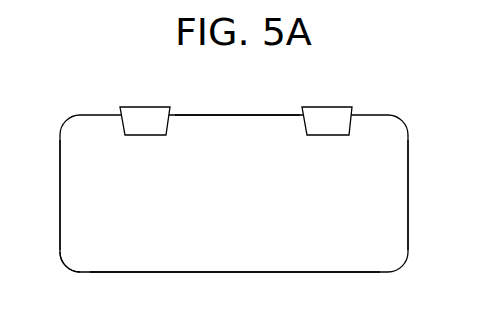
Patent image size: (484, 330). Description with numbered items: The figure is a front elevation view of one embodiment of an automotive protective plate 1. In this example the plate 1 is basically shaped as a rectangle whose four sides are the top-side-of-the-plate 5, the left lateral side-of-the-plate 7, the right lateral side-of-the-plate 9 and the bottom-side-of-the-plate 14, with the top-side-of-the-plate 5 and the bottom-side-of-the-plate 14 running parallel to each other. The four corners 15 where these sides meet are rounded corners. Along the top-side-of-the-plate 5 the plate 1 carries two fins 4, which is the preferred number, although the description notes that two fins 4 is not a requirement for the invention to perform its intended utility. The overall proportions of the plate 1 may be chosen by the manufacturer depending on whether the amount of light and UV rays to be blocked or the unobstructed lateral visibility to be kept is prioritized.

The plate 1 is at (234, 193).
The fin 4 is at (143, 119).
The top-side-of-the-plate 5 is at (208, 115).
The left lateral side-of-the-plate 7 is at (60, 208).
The right lateral side-of-the-plate 9 is at (408, 185).
The bottom-side-of-the-plate 14 is at (233, 272).
The corner 15 is at (70, 270).